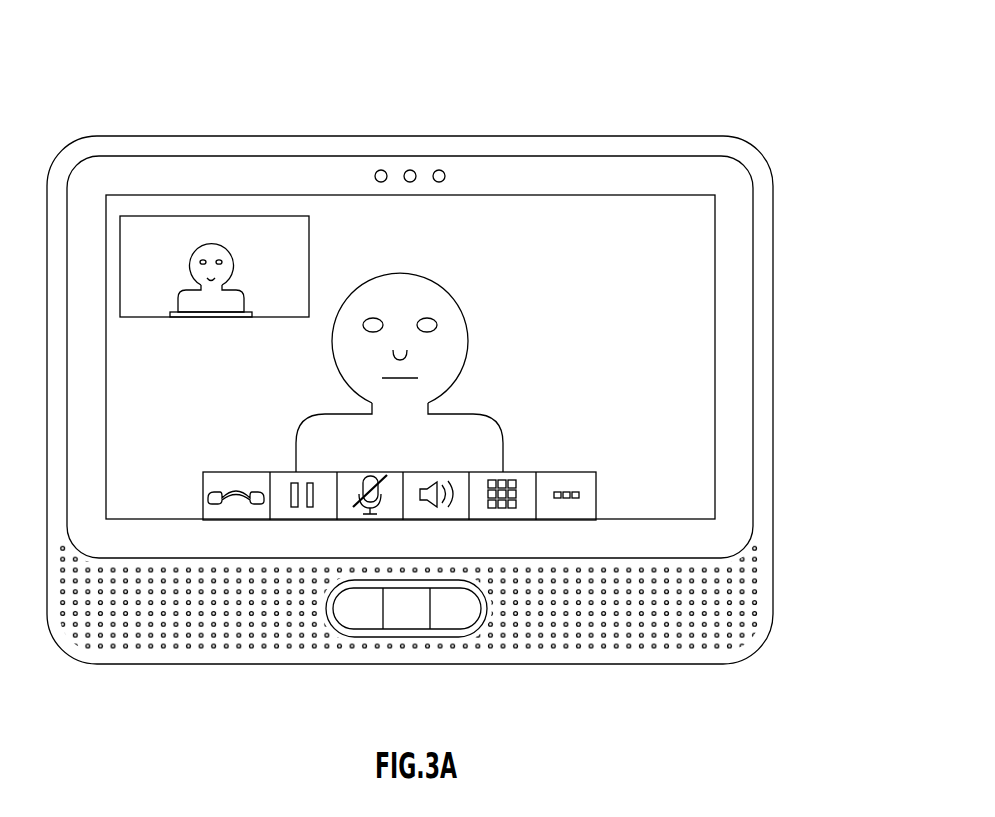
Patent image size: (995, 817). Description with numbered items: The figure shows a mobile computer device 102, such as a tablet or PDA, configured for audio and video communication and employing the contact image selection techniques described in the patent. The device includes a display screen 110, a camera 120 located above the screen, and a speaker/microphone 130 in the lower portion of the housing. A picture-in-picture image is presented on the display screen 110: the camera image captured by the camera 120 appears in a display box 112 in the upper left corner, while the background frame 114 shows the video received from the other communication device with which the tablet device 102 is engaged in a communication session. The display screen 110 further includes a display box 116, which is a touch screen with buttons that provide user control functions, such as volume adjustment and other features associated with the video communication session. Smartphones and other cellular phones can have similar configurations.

The mobile computer device 102 is at (578, 74).
The display screen 110 is at (735, 258).
The display box 112 is at (217, 224).
The background frame 114 is at (680, 355).
The display box 116 is at (596, 494).
The camera 120 is at (408, 165).
The speaker/microphone 130 is at (635, 638).